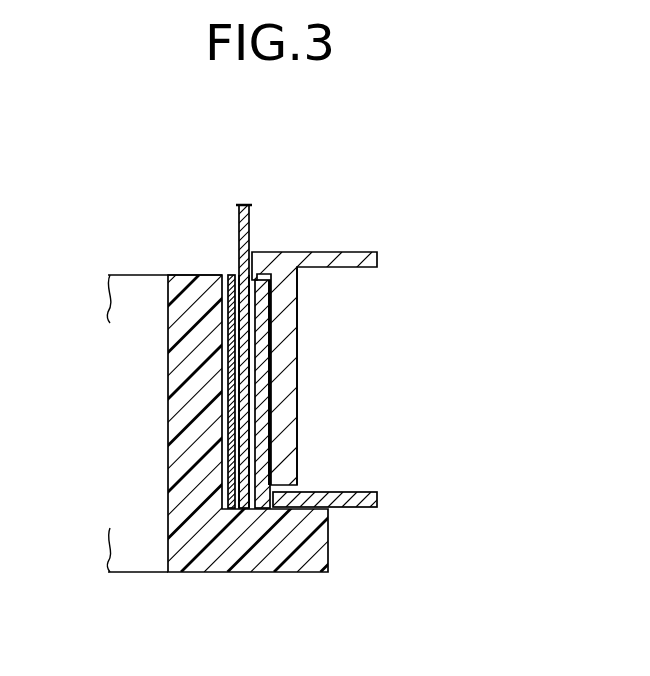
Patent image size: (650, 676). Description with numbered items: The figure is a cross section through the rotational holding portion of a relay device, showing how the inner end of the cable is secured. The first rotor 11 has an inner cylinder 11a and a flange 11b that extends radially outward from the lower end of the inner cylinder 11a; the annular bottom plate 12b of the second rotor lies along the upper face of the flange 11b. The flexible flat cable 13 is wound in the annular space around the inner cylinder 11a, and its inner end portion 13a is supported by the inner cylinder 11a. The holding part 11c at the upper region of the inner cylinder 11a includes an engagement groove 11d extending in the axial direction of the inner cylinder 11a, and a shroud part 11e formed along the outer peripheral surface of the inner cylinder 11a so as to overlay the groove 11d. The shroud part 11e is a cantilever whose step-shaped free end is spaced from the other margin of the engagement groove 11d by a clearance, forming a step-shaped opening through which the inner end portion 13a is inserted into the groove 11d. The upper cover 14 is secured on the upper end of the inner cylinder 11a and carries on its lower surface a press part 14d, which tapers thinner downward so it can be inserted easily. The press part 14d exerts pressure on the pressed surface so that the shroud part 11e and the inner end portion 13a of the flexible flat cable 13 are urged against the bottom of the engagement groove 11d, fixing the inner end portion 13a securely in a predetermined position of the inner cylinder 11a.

The first rotor 11 is at (309, 413).
The inner cylinder 11a is at (168, 467).
The flange 11b is at (287, 573).
The holding part 11c is at (182, 250).
The engagement groove 11d is at (212, 372).
The shroud part 11e is at (268, 456).
The annular bottom plate 12b is at (362, 508).
The flexible flat cable 13 is at (272, 336).
The inner end portion 13a is at (235, 318).
The upper cover 14 is at (270, 324).
The press part 14d is at (299, 402).